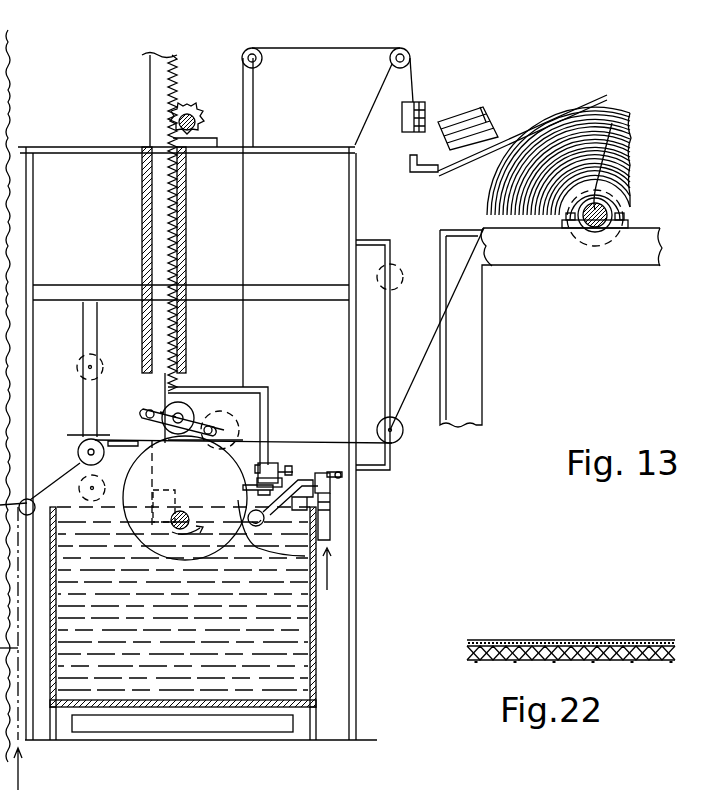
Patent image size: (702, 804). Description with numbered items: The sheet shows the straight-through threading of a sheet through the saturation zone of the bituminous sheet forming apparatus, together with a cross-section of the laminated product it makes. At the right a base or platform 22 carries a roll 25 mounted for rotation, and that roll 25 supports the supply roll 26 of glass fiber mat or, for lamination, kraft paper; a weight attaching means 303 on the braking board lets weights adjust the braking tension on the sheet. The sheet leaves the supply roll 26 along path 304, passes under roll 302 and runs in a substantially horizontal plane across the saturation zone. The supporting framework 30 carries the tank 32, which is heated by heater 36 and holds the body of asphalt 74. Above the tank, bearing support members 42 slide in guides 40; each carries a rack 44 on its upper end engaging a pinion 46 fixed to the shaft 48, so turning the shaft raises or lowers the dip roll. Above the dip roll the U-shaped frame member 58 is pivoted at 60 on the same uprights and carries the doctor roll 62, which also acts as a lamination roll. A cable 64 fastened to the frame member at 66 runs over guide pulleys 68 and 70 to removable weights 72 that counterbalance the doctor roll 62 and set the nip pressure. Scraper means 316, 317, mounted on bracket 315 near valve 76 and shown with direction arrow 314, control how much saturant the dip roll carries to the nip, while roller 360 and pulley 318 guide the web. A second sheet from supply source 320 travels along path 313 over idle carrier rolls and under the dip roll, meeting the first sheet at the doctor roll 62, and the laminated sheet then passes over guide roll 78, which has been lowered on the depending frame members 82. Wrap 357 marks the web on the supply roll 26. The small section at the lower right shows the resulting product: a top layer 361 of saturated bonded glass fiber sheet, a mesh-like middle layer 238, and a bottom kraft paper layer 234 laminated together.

In FIG. 13, the base or platform 22 is at (470, 323).
In FIG. 13, the roll 25 is at (603, 240).
In FIG. 13, the supply roll 26 is at (578, 135).
In FIG. 13, the supporting framework 30 is at (375, 198).
In FIG. 13, the tank 32 is at (318, 620).
In FIG. 13, the heater 36 is at (248, 728).
In FIG. 13, the guides 40 is at (180, 262).
In FIG. 13, the bearing support member 42 is at (160, 340).
In FIG. 13, the rack 44 is at (180, 222).
In FIG. 13, the pinion 46 is at (200, 120).
In FIG. 13, the shaft 48 is at (195, 105).
In FIG. 13, the U-shaped frame member 58 is at (192, 400).
In FIG. 13, the pivot 60 is at (148, 418).
In FIG. 13, the doctor roll 62 is at (160, 403).
In FIG. 13, the cable 64 is at (245, 235).
In FIG. 13, the cable attachment point 66 is at (262, 460).
In FIG. 13, the guide pulley 68 is at (262, 60).
In FIG. 13, the guide pulley 70 is at (392, 64).
In FIG. 13, the removable weights 72 is at (430, 118).
In FIG. 13, the body of asphalt 74 is at (158, 630).
In FIG. 13, the nozzle 76 is at (330, 478).
In FIG. 13, the guide roll 78 is at (76, 455).
In FIG. 13, the depending frame member 82 is at (88, 345).
In FIG. 13, the roll 302 is at (395, 425).
In FIG. 13, the weight attaching means 303 is at (515, 78).
In FIG. 13, the web 304 is at (605, 100).
In FIG. 13, the idle carrier roll 313 is at (32, 497).
In FIG. 13, the flow arrow 314 is at (330, 537).
In FIG. 13, the bracket 315 is at (250, 385).
In FIG. 13, the scraper means 316 is at (268, 462).
In FIG. 13, the scraper means 317 is at (292, 470).
In FIG. 13, the guide pulley 318 is at (392, 335).
In FIG. 13, the supply source 320 is at (22, 722).
In FIG. 13, the roll wrap 357 is at (626, 130).
In FIG. 13, the roller 360 is at (80, 365).
In FIG. 22, the top layer 361 is at (535, 605).
In FIG. 22, the mesh layer 238 is at (562, 640).
In FIG. 22, the bottom layer 234 is at (615, 640).